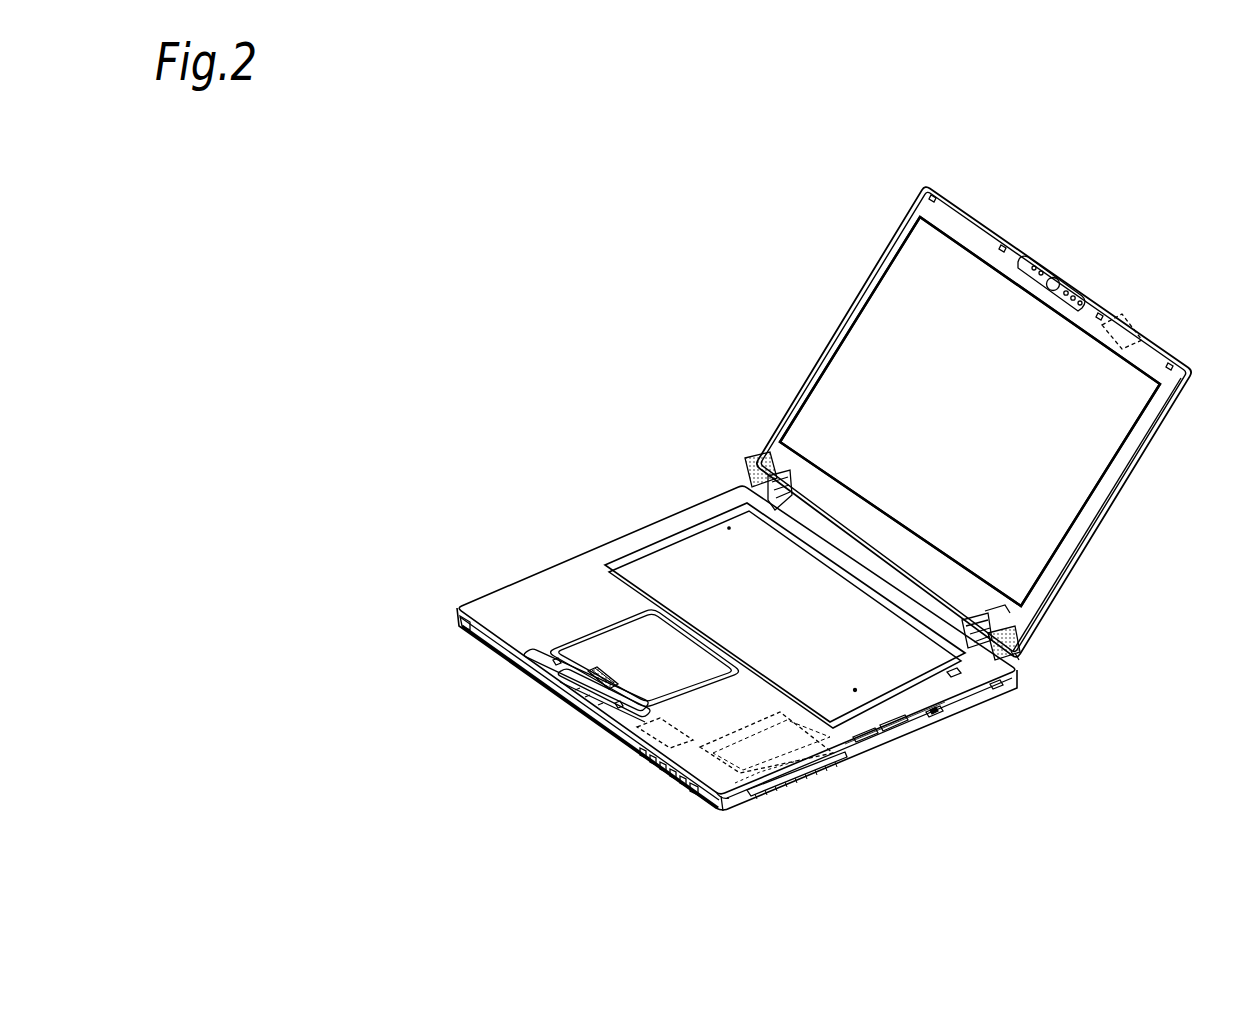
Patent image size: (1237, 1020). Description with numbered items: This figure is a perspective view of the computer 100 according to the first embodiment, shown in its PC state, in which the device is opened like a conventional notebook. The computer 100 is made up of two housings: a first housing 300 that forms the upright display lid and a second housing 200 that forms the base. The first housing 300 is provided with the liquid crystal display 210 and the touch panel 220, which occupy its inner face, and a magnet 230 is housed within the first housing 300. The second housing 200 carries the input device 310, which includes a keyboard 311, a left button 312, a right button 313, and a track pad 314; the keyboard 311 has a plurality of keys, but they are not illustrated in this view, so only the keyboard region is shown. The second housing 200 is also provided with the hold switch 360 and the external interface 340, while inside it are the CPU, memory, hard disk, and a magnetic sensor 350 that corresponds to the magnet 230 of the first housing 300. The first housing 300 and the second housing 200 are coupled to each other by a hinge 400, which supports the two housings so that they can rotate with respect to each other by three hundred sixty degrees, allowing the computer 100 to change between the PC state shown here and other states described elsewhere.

The computer 100 is at (505, 251).
The second housing 200 is at (829, 317).
The liquid crystal display 210 is at (838, 397).
The touch panel 220 is at (926, 411).
The magnet 230 is at (1128, 338).
The first housing 300 is at (590, 539).
The input device 310 is at (566, 627).
The keyboard 311 is at (730, 555).
The left button 312 is at (527, 658).
The right button 313 is at (583, 703).
The track pad 314 is at (597, 652).
The external interface 340 is at (906, 744).
The magnetic sensor 350 is at (623, 730).
The hold switch 360 is at (557, 678).
The hinge 400 is at (770, 452).